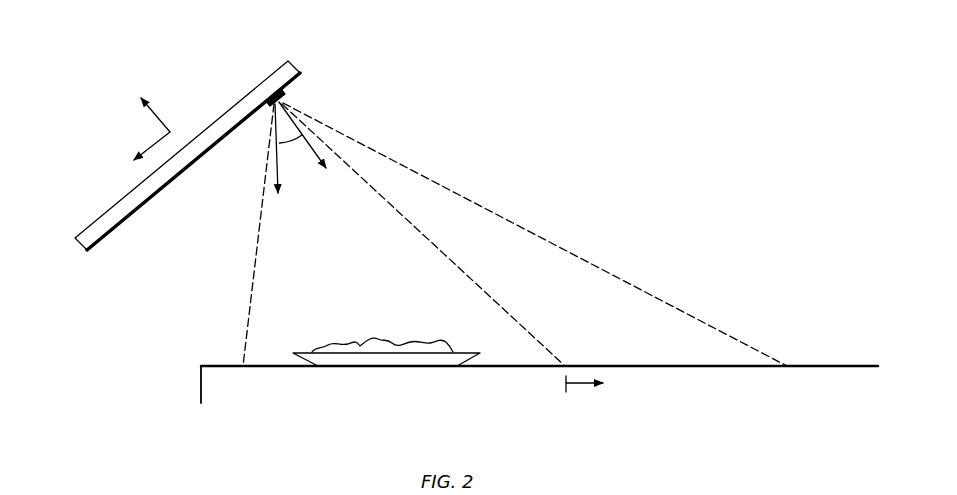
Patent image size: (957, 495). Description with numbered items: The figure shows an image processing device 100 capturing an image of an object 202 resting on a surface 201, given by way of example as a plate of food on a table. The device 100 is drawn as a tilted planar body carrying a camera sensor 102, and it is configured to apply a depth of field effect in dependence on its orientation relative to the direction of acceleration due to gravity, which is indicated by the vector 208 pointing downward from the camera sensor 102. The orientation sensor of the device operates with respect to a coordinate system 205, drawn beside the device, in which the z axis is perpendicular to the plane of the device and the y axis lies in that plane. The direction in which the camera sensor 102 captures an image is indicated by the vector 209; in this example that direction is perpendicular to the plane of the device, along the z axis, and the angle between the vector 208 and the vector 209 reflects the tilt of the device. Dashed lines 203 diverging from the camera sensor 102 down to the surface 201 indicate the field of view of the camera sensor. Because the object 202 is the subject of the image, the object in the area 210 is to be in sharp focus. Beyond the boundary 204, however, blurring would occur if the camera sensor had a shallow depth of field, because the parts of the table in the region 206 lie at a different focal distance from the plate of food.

The image processing device 100 is at (280, 66).
The camera sensor 102 is at (283, 97).
The surface 201 is at (539, 384).
The object 202 is at (388, 360).
The lines 203 is at (237, 259).
The boundary 204 is at (433, 245).
The coordinate system 205 is at (166, 103).
The region 206 is at (583, 385).
The vector 208 is at (275, 173).
The vector 209 is at (317, 142).
The area 210 is at (322, 235).